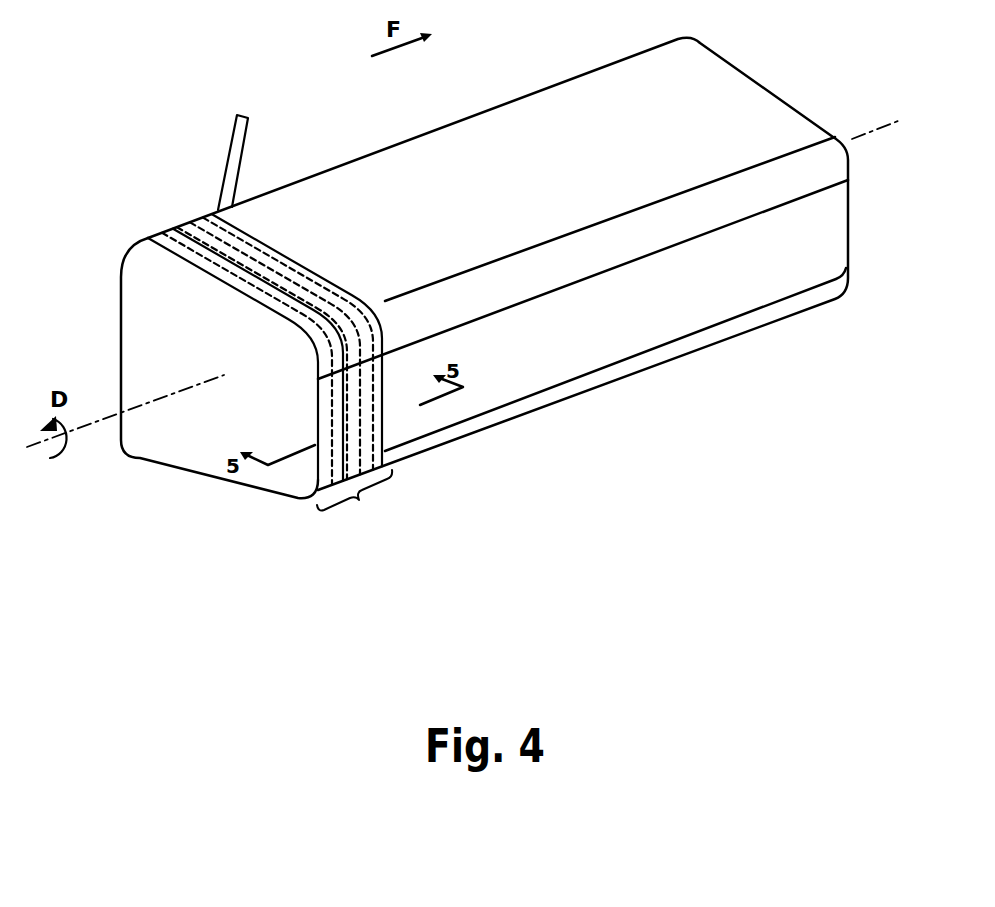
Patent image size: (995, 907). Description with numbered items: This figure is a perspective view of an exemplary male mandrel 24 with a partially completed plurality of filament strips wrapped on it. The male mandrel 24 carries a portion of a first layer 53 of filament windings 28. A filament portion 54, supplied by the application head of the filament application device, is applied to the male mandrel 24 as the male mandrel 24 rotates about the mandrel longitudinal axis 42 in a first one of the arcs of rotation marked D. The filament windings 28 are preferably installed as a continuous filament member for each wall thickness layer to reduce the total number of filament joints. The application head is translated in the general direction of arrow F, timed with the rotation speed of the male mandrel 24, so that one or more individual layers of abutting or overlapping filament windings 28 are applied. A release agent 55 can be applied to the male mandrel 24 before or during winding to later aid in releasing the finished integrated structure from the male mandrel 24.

The male mandrel 24 is at (472, 133).
The filament windings 28 is at (186, 222).
The mandrel longitudinal axis 42 is at (80, 427).
The first layer 53 is at (354, 504).
The filament portion 54 is at (235, 145).
The release agent 55 is at (302, 193).